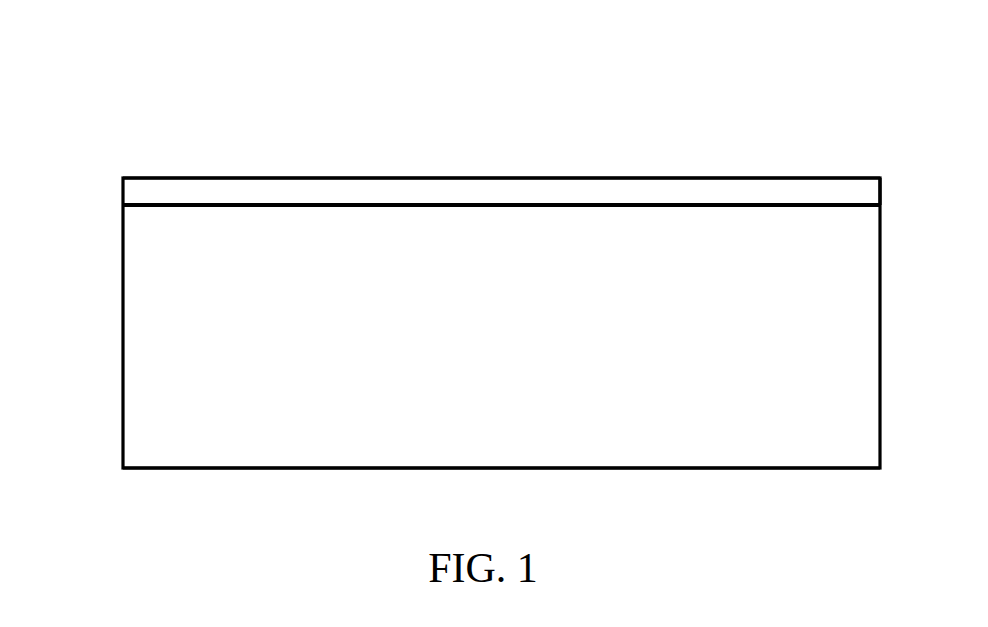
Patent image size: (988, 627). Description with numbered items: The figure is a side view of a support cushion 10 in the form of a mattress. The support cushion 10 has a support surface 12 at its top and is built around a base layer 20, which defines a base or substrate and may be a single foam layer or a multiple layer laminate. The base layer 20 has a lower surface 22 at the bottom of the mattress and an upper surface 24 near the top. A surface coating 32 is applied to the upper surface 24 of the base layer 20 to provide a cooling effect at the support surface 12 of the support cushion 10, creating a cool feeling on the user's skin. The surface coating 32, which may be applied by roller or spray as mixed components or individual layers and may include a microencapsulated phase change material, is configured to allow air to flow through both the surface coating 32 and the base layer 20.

The support cushion 10 is at (208, 96).
The support surface 12 is at (327, 177).
The base layer 20 is at (122, 295).
The lower surface 22 is at (170, 467).
The upper surface 24 is at (142, 207).
The surface coating 32 is at (880, 203).